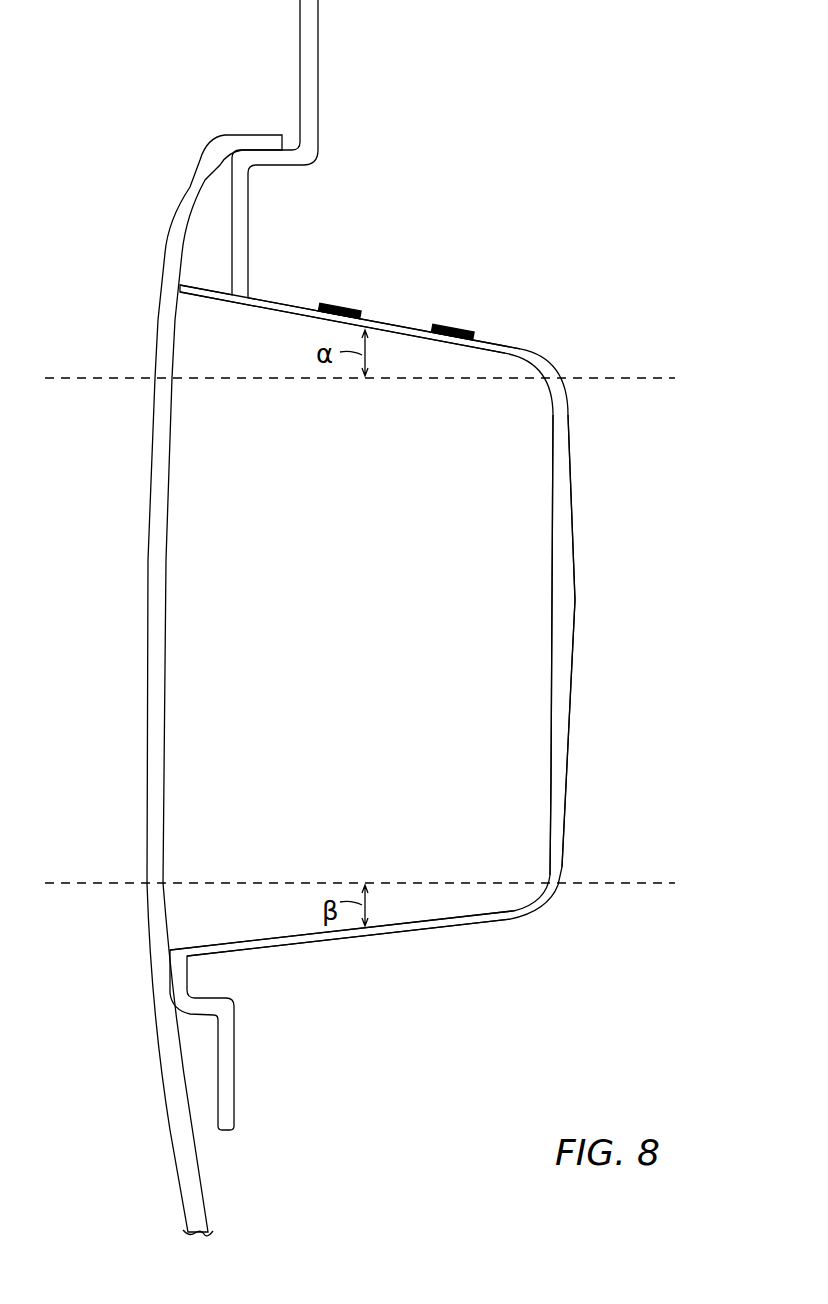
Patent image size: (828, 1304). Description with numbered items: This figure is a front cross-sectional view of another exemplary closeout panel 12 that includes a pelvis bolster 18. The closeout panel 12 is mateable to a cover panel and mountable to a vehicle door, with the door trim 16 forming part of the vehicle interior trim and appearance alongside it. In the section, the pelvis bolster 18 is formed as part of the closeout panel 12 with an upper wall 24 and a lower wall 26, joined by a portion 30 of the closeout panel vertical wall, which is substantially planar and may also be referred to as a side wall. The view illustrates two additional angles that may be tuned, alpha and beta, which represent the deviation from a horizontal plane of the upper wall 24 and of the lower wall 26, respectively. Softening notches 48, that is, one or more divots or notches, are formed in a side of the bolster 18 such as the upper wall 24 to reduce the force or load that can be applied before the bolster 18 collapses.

The closeout panel 12 is at (432, 565).
The door trim 16 is at (148, 602).
The pelvis bolster 18 is at (622, 645).
The upper wall 24 is at (397, 326).
The lower wall 26 is at (397, 937).
The portion of vertical wall 30 is at (575, 655).
The softening notches 48 is at (340, 306).